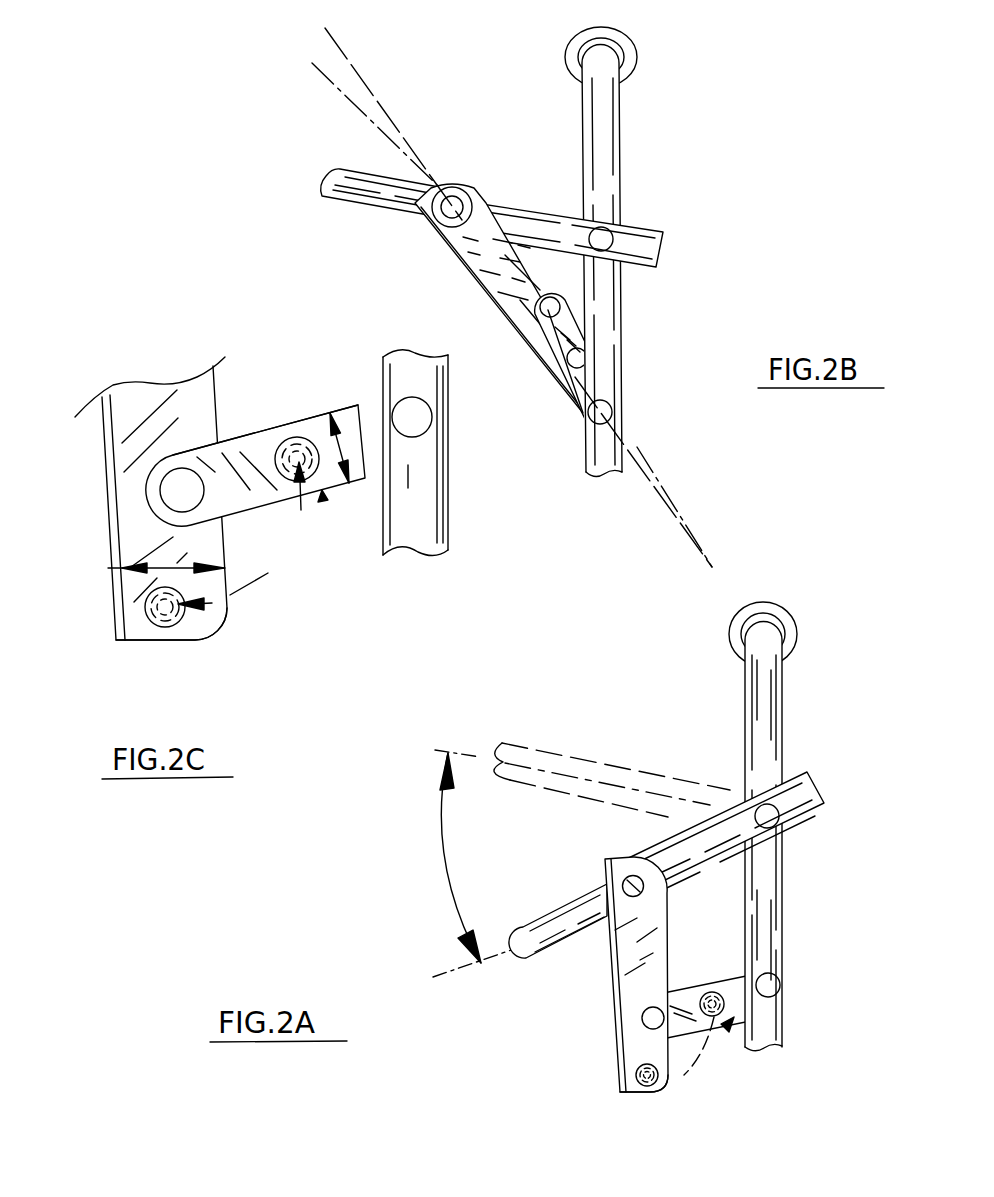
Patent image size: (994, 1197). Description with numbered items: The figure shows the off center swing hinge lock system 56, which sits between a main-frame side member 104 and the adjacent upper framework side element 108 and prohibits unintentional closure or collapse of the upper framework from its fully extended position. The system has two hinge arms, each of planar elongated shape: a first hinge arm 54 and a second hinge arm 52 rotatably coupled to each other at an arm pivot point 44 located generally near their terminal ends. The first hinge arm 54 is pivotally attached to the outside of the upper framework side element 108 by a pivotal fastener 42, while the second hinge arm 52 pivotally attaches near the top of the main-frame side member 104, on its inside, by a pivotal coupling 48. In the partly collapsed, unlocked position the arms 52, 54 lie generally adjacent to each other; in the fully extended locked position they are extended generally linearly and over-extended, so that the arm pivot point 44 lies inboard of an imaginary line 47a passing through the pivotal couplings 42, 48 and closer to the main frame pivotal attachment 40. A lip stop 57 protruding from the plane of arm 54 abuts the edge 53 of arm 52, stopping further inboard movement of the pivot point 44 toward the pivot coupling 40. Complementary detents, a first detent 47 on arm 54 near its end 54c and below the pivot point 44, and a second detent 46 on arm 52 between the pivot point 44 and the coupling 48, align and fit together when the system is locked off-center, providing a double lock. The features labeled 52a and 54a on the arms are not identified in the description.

In FIG. 2B, the main frame pivotal attachment 40 is at (637, 230).
In FIG. 2A, the main frame pivotal attachment 40 is at (782, 830).
In FIG. 2B, the pivotal fastener 42 is at (438, 197).
In FIG. 2A, the pivotal fastener 42 is at (620, 878).
In FIG. 2B, the arm pivot point 44 is at (568, 306).
In FIG. 2C, the arm pivot point 44 is at (158, 497).
In FIG. 2A, the arm pivot point 44 is at (640, 1033).
In FIG. 2B, the second detent 46 is at (577, 358).
In FIG. 2C, the second detent 46 is at (270, 453).
In FIG. 2A, the second detent 46 is at (710, 991).
In FIG. 2C, the first detent 47 is at (177, 623).
In FIG. 2A, the first detent 47 is at (640, 1068).
In FIG. 2B, the imaginary line 47a is at (355, 72).
In FIG. 2B, the pivotal coupling 48 is at (610, 412).
In FIG. 2C, the pivotal coupling 48 is at (420, 437).
In FIG. 2A, the pivotal coupling 48 is at (784, 997).
In FIG. 2B, the second hinge arm 52 is at (553, 350).
In FIG. 2C, the second hinge arm 52 is at (342, 402).
In FIG. 2A, the second hinge arm 52 is at (686, 990).
In FIG. 2C, the link edge 52a is at (300, 420).
In FIG. 2B, the edge 53 is at (580, 400).
In FIG. 2C, the edge 53 is at (323, 497).
In FIG. 2A, the edge 53 is at (727, 1026).
In FIG. 2B, the first hinge arm 54 is at (457, 259).
In FIG. 2C, the first hinge arm 54 is at (102, 458).
In FIG. 2A, the first hinge arm 54 is at (613, 1002).
In FIG. 2C, the bracket width 54a is at (158, 565).
In FIG. 2C, the end of arm 54c is at (163, 640).
In FIG. 2A, the end of arm 54c is at (647, 1093).
In FIG. 2B, the off center swing hinge lock system 56 is at (552, 171).
In FIG. 2C, the off center swing hinge lock system 56 is at (293, 536).
In FIG. 2A, the off center swing hinge lock system 56 is at (731, 912).
In FIG. 2B, the lip stop 57 is at (483, 290).
In FIG. 2C, the lip stop 57 is at (155, 640).
In FIG. 2A, the lip stop 57 is at (625, 960).
In FIG. 2B, the main-frame side member 104 is at (620, 130).
In FIG. 2A, the main-frame side member 104 is at (789, 915).
In FIG. 2B, the upper framework side element 108 is at (360, 167).
In FIG. 2A, the upper framework side element 108 is at (550, 906).